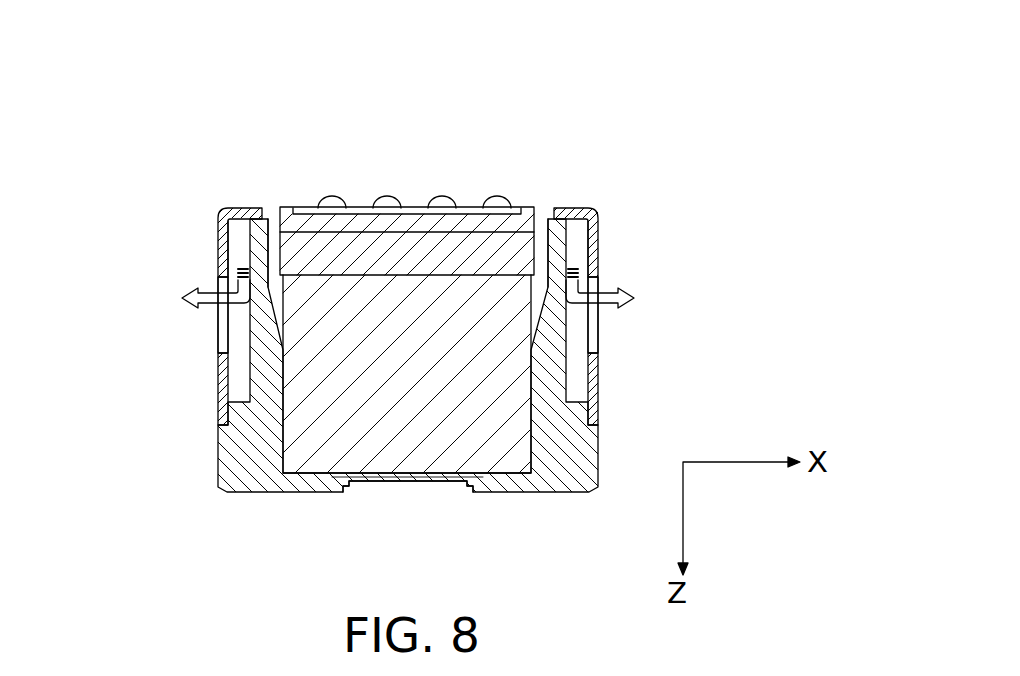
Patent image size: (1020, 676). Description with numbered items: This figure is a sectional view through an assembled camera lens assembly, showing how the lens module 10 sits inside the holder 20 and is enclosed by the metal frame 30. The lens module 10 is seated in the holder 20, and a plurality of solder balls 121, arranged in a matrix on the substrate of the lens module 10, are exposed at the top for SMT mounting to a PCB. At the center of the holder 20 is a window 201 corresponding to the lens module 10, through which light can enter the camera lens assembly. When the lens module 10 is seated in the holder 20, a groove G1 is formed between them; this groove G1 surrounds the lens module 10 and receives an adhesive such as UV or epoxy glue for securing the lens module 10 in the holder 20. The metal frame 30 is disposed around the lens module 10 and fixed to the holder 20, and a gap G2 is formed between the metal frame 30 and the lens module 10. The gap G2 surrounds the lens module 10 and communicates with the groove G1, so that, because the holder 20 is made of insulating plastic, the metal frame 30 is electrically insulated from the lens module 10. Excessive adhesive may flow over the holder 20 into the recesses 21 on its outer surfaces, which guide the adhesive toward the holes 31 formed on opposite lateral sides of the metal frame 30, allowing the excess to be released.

The lens module 10 is at (497, 197).
The solder balls 121 is at (442, 199).
The holder 20 is at (214, 446).
The window 201 is at (409, 493).
The recesses 21 is at (233, 262).
The metal frame 30 is at (597, 204).
The holes 31 is at (223, 337).
The groove G1 is at (275, 238).
The gap G2 is at (273, 208).